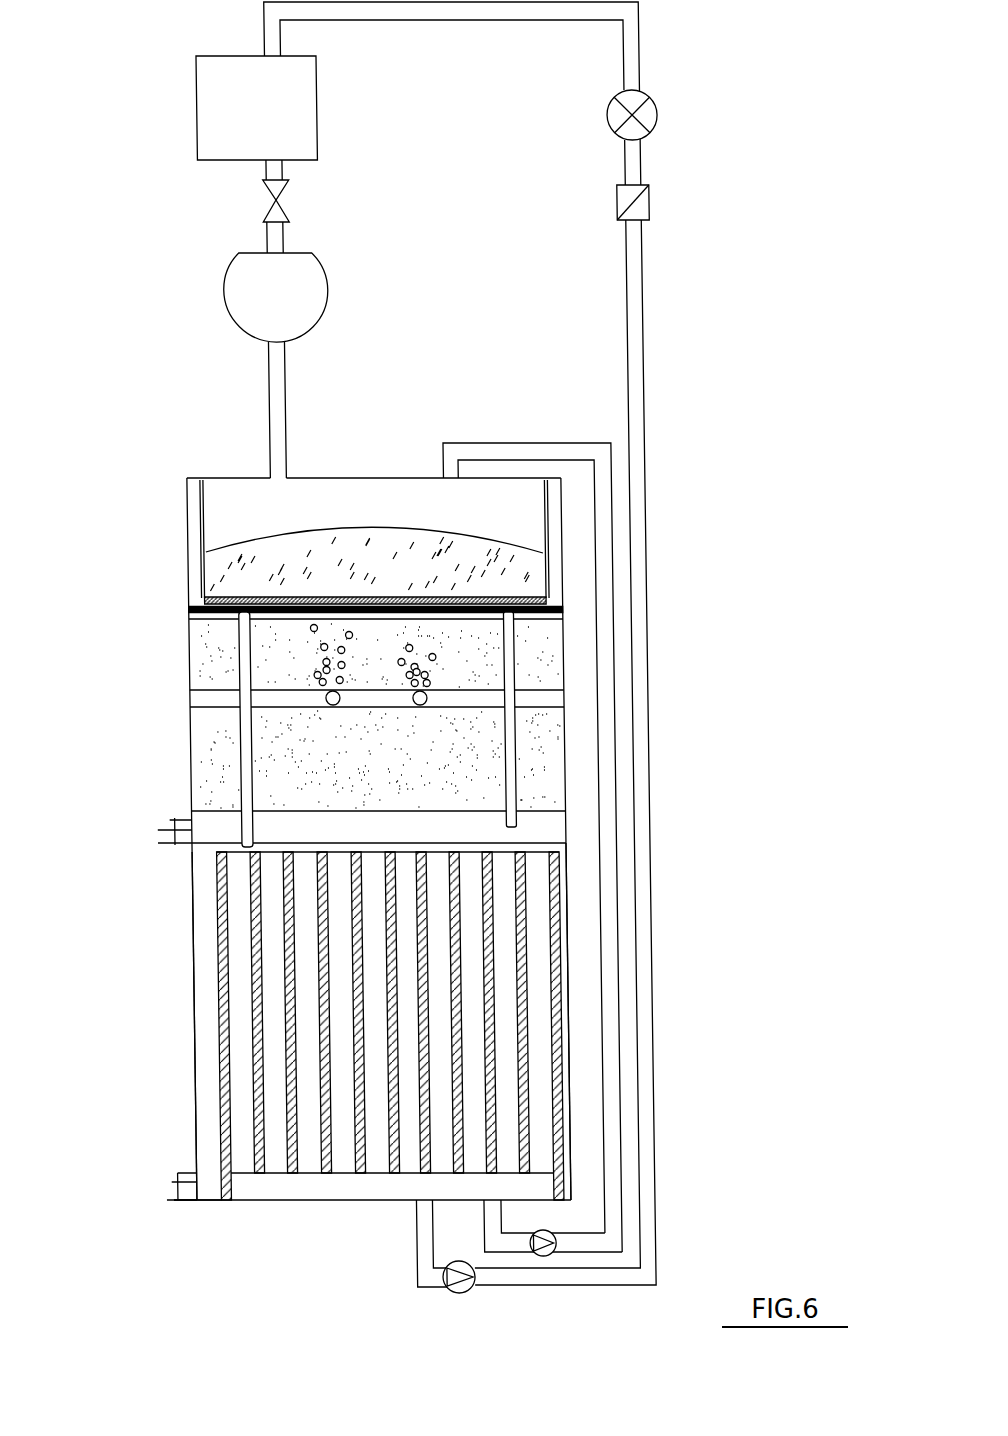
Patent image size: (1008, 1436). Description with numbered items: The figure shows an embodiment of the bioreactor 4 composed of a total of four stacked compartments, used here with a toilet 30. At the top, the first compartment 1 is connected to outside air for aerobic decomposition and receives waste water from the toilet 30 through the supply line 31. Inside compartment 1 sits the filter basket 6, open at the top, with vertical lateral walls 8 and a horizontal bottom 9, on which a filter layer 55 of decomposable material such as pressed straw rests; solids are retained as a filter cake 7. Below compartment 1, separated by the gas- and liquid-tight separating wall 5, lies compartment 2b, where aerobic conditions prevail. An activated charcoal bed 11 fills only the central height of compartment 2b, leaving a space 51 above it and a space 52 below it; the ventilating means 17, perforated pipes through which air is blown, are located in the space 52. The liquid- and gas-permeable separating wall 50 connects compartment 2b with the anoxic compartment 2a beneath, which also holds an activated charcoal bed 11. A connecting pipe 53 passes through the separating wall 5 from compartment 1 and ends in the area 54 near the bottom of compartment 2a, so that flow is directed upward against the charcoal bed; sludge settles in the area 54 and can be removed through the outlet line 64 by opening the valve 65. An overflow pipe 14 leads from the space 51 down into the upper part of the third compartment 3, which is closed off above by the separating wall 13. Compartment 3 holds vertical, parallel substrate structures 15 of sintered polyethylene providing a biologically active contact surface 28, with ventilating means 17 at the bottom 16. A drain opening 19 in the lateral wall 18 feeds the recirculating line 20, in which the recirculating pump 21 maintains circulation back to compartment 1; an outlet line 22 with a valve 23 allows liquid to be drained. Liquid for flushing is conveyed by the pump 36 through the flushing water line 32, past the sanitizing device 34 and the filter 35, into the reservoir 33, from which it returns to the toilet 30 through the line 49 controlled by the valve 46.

The first compartment 1 is at (181, 610).
The compartment 2a is at (182, 808).
The compartment 2b is at (182, 705).
The third compartment 3 is at (184, 855).
The bioreactor 4 is at (206, 1218).
The separating wall 5 is at (550, 620).
The filter basket 6 is at (187, 497).
The filter cake 7 is at (468, 553).
The lateral walls 8 is at (204, 534).
The bottom 9 is at (297, 605).
The activated charcoal bed 11 is at (363, 752).
The separating wall 13 is at (530, 845).
The overflow pipe 14 is at (262, 600).
The substrate structures 15 is at (358, 986).
The bottom 16 is at (363, 1203).
The ventilating means 17 is at (420, 706).
The lateral wall 18 is at (568, 1010).
The drain opening 19 is at (478, 1212).
The recirculating line 20 is at (602, 488).
The recirculating pump 21 is at (535, 1236).
The outlet line 22 is at (210, 1163).
The valve 23 is at (167, 1192).
The biologically active contact surface 28 is at (445, 925).
The toilet 30 is at (232, 273).
The supply line 31 is at (277, 362).
The flushing water line 32 is at (636, 283).
The reservoir 33 is at (215, 105).
The sanitizing device 34 is at (652, 115).
The filter 35 is at (652, 210).
The pump 36 is at (442, 1291).
The valve 46 is at (265, 207).
The line 49 is at (265, 172).
The separating wall 50 is at (528, 705).
The space 51 is at (462, 613).
The space 52 is at (443, 697).
The connecting pipe 53 is at (512, 738).
The area 54 is at (467, 830).
The filter layer 55 is at (530, 575).
The outlet line 64 is at (183, 817).
The valve 65 is at (168, 832).